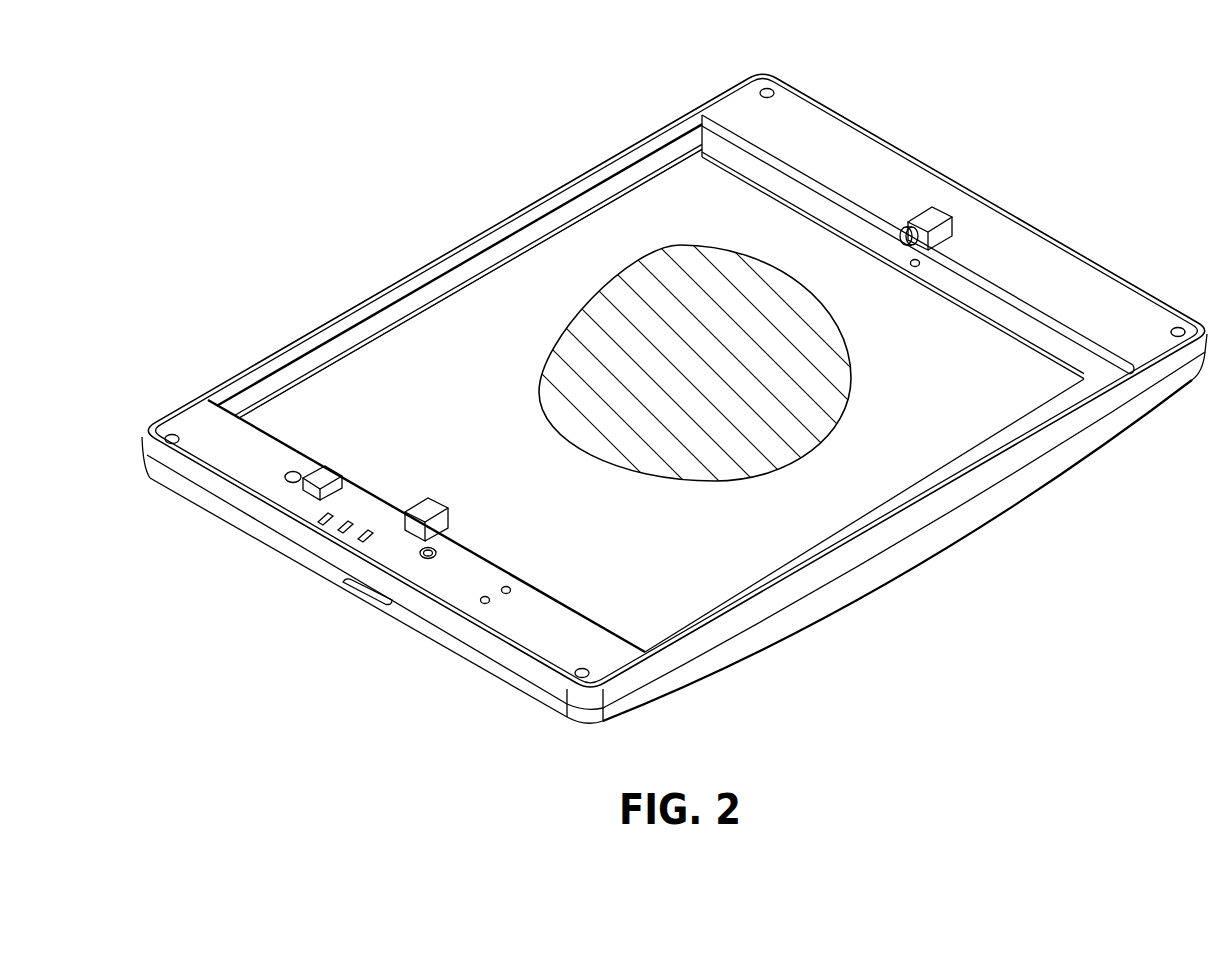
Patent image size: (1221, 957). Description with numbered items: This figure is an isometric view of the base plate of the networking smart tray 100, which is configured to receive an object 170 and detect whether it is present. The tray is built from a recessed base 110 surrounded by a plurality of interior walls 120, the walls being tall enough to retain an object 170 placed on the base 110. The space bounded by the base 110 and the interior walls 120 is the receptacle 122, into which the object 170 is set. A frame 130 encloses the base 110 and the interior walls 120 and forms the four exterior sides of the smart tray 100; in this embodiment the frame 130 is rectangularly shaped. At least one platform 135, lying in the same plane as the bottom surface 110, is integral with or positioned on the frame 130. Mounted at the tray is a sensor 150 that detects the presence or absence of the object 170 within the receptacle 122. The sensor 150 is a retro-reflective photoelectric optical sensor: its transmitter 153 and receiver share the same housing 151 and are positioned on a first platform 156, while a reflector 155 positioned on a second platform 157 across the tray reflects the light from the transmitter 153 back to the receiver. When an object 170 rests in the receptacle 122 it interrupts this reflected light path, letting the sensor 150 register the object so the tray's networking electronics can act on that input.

The networking smart tray 100 is at (1062, 82).
The recessed base 110 is at (485, 307).
The interior walls 120 is at (520, 242).
The receptacle 122 is at (978, 420).
The frame 130 is at (440, 625).
The platform 135 is at (190, 418).
The sensor 150 is at (428, 500).
The housing 151 is at (960, 220).
The transmitter 153 is at (905, 250).
The reflector 155 is at (452, 520).
The first platform 156 is at (1140, 312).
The second platform 157 is at (565, 625).
The object 170 is at (843, 385).